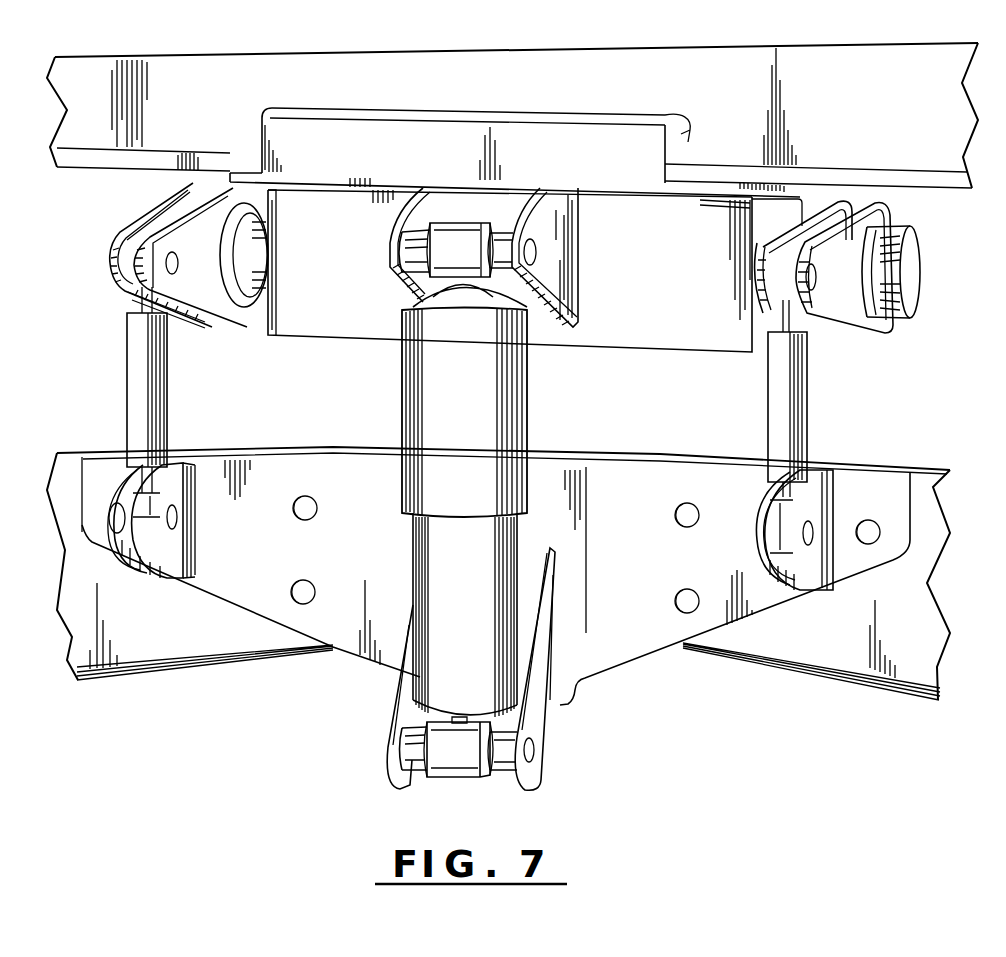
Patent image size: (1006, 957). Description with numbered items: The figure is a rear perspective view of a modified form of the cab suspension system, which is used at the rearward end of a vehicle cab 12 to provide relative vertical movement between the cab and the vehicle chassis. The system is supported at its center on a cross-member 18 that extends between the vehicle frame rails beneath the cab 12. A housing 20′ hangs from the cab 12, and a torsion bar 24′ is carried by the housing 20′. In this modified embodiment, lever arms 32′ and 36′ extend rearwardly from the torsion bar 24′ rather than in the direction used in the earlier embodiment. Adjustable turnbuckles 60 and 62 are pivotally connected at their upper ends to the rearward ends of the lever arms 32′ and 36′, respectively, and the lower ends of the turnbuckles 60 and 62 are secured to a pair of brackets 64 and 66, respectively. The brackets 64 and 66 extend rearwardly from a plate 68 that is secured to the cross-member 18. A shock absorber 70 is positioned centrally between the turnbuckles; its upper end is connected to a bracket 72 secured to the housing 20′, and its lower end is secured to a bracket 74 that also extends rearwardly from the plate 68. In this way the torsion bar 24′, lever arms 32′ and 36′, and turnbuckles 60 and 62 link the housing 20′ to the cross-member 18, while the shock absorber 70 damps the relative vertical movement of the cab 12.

The vehicle cab 12 is at (419, 72).
The cross-member 18 is at (797, 647).
The housing 20′ is at (348, 320).
The torsion bar 24′ is at (262, 332).
The lever arm 32′ is at (845, 322).
The lever arm 36′ is at (114, 235).
The adjustable turnbuckle 60 is at (800, 409).
The adjustable turnbuckle 62 is at (133, 374).
The bracket 64 is at (817, 562).
The bracket 66 is at (175, 567).
The plate 68 is at (623, 637).
The shock absorber 70 is at (493, 421).
The bracket 72 is at (548, 294).
The bracket 74 is at (533, 731).